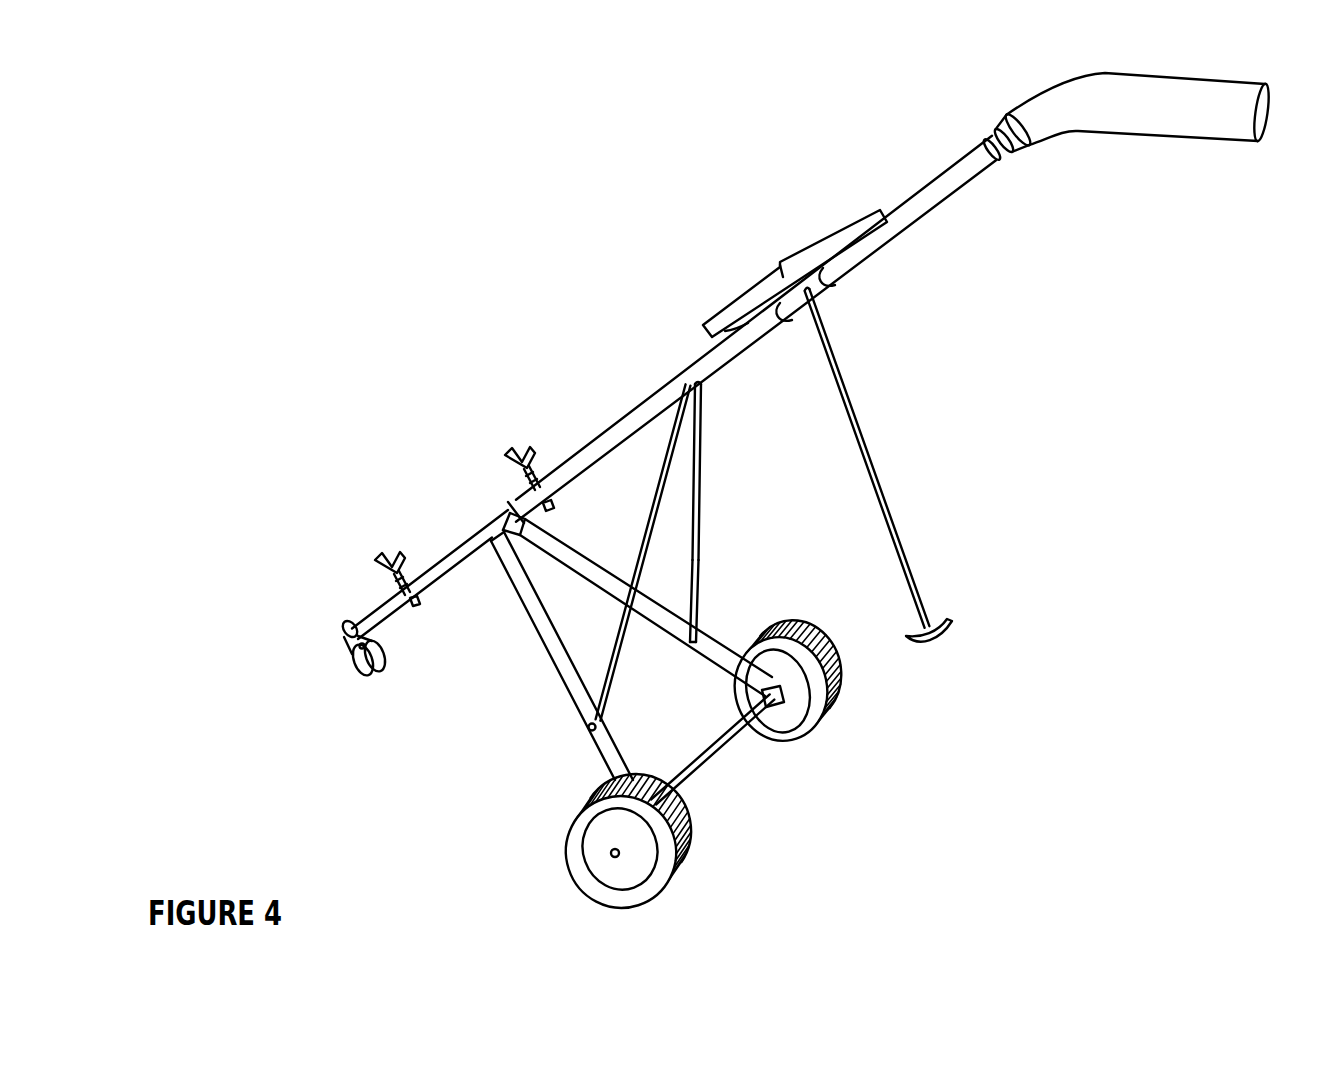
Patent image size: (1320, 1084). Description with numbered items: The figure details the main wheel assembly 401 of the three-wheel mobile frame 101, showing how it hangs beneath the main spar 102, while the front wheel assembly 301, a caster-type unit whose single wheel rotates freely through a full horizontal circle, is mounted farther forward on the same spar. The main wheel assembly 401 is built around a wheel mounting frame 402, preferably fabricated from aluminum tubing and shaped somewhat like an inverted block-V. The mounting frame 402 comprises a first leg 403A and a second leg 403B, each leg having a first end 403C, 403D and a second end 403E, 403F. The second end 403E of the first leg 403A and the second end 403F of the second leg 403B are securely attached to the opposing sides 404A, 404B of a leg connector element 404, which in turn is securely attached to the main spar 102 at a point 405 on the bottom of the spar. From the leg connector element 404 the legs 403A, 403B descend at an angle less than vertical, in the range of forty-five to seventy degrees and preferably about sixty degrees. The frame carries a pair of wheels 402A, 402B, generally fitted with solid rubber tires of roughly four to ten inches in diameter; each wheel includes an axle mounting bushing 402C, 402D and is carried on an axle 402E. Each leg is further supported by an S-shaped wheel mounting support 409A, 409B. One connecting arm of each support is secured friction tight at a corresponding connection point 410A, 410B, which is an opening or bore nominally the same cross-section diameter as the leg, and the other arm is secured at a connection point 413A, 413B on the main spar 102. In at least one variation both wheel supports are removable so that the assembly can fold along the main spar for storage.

The three-wheel mobile frame 101 is at (764, 170).
The main spar 102 is at (587, 443).
The front wheel assembly 301 is at (343, 649).
The main wheel assembly 401 is at (470, 756).
The wheel mounting frame 402 is at (527, 607).
The wheel 402A is at (659, 901).
The wheel 402B is at (814, 724).
The axle mounting bushing 402C is at (611, 853).
The axle mounting bushing 402D is at (796, 720).
The axle 402E is at (730, 748).
The first leg 403A is at (560, 673).
The second leg 403B is at (719, 648).
The first end of first leg 403C is at (486, 526).
The first end of second leg 403D is at (510, 517).
The second end of first leg 403E is at (636, 777).
The second end of second leg 403F is at (763, 703).
The leg connector element 404 is at (490, 540).
The side of leg connector element 404A is at (482, 518).
The side of leg connector element 404B is at (533, 523).
The attachment point 405 is at (552, 507).
The S-shaped wheel mounting support 409A is at (651, 473).
The S-shaped wheel mounting support 409B is at (700, 482).
The connection point 410A is at (588, 727).
The connection point 410B is at (698, 618).
The connection point 413A is at (683, 380).
The connection point 413B is at (701, 385).